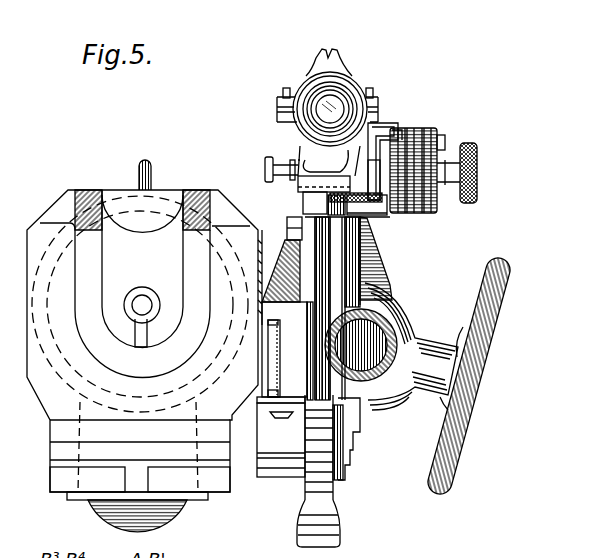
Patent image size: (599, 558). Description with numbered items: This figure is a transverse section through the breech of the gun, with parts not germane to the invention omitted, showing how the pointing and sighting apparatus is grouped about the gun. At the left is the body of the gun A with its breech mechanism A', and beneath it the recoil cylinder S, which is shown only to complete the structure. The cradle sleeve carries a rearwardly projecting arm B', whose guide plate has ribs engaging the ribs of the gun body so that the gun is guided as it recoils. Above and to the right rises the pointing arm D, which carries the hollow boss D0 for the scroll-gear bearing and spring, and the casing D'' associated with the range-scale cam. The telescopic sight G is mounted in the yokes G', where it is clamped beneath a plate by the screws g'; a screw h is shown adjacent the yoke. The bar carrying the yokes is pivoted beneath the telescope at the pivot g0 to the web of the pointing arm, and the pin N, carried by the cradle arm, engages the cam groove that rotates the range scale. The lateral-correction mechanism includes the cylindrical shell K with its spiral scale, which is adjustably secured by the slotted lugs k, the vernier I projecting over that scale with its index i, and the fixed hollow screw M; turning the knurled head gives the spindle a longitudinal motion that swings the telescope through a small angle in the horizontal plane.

The body of the gun A is at (144, 345).
The breech mechanism A' is at (142, 269).
The recoil cylinder S is at (175, 517).
The telescopic sight G is at (334, 101).
The screws g' is at (332, 90).
The yokes G' is at (305, 151).
The adjusting screw h is at (265, 166).
The pivot g0 is at (290, 203).
The pin N is at (290, 222).
The vernier I is at (382, 126).
The index i is at (400, 130).
The cylindrical shell K is at (417, 133).
The slotted lugs k is at (445, 143).
The hollow screw M is at (378, 172).
The casing D'' is at (392, 258).
The pointing arm D is at (369, 370).
The hollow boss D0 is at (420, 313).
The rearwardly projecting arm B' is at (287, 320).